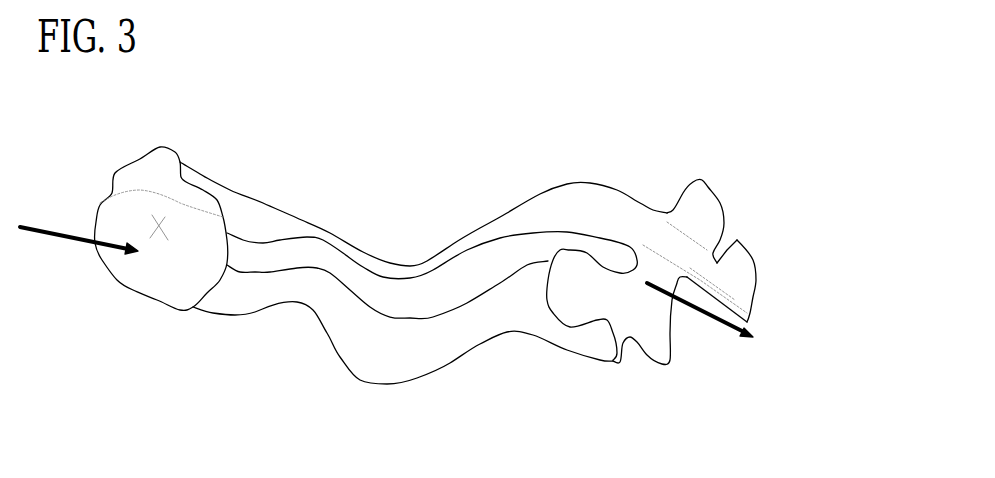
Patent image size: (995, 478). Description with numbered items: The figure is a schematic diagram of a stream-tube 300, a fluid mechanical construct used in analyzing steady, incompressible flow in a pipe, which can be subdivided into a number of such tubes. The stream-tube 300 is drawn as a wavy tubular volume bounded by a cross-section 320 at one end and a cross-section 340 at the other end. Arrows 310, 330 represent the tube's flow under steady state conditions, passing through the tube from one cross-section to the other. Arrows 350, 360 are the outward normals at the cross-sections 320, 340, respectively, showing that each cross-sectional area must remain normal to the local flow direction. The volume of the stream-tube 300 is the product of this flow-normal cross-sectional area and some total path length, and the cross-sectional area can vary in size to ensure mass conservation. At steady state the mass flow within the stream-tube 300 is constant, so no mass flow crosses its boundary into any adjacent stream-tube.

The stream-tube 300 is at (503, 125).
The arrow 310 is at (20, 227).
The cross-section 320 is at (180, 277).
The arrow 330 is at (690, 279).
The cross-section 340 is at (636, 341).
The outward normal 350 is at (118, 223).
The outward normal 360 is at (704, 248).